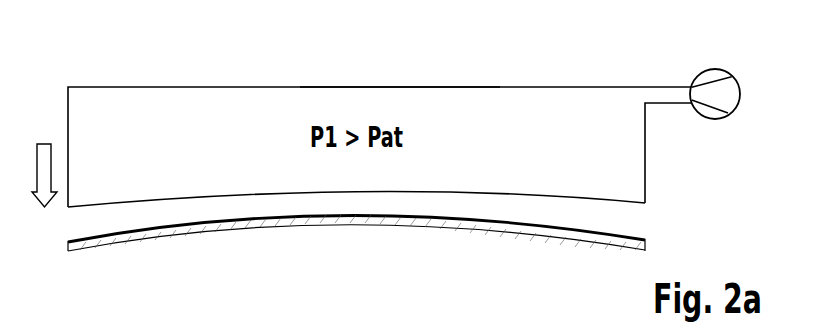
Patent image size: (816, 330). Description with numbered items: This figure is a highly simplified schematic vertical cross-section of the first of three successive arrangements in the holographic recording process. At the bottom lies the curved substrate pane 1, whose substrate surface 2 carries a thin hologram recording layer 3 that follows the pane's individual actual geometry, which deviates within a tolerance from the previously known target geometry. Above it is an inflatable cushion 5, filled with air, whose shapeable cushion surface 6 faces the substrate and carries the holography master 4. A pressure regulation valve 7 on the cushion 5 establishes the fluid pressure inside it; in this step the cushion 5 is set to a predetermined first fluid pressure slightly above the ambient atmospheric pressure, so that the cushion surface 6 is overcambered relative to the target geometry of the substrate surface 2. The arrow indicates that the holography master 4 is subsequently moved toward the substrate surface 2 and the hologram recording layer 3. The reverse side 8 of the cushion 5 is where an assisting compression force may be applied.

The curved substrate pane 1 is at (230, 230).
The substrate surface 2 is at (569, 228).
The hologram recording layer 3 is at (597, 233).
The holography master 4 is at (470, 193).
The inflatable cushion 5 is at (137, 105).
The cushion surface 6 is at (437, 203).
The pressure regulation valve 7 is at (710, 70).
The reverse side 8 is at (498, 87).